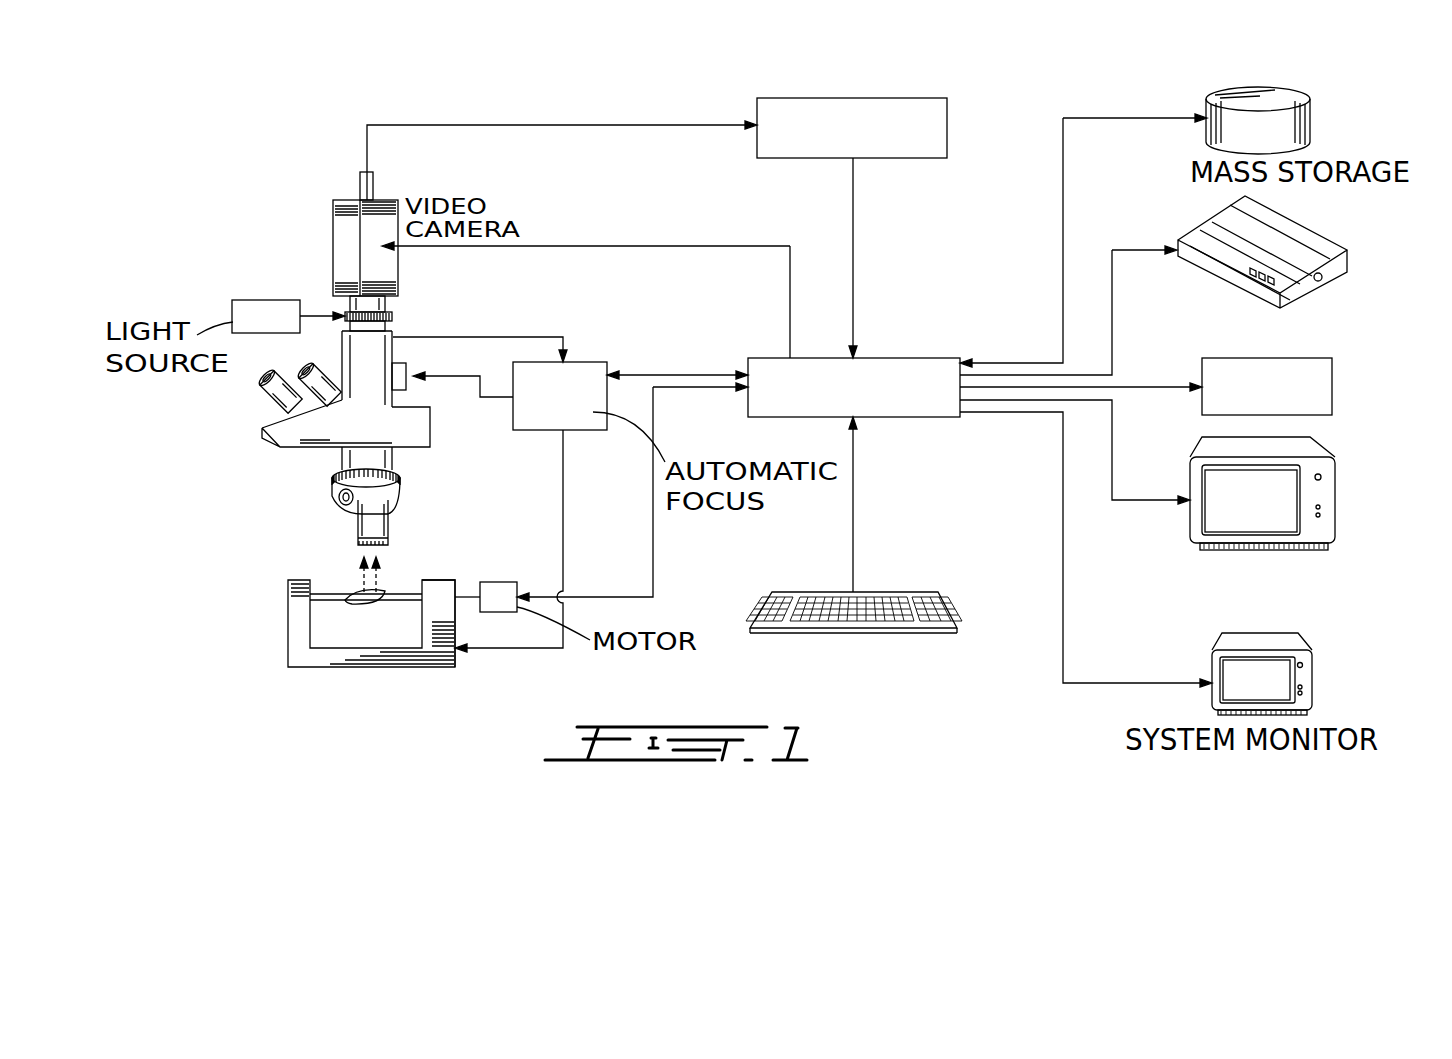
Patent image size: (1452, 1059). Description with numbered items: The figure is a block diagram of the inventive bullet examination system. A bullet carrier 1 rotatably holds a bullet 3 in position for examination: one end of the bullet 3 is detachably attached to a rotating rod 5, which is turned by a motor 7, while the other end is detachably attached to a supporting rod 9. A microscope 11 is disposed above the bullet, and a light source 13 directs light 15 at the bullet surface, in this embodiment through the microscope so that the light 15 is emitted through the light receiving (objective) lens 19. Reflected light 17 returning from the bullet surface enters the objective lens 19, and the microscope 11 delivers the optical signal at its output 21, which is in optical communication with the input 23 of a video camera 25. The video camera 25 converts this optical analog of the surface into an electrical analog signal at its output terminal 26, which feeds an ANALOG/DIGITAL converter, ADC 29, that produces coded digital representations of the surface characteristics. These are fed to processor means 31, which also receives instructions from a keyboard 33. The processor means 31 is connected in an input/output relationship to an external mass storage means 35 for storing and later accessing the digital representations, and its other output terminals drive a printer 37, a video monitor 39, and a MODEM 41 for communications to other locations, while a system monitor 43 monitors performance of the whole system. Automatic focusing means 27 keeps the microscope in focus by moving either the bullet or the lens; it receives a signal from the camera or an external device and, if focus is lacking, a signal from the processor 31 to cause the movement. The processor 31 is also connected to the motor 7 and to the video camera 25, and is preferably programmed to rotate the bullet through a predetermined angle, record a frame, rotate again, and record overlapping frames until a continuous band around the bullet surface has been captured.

The bullet carrier 1 is at (342, 663).
The bullet 3 is at (382, 592).
The rotating rod 5 is at (407, 593).
The motor 7 is at (503, 607).
The supporting rod 9 is at (323, 600).
The microscope 11 is at (377, 357).
The light source 13 is at (263, 307).
The light 15 is at (404, 522).
The reflected light 17 is at (367, 550).
The light receiving (objective) lens 19 is at (363, 537).
The output 21 is at (390, 315).
The input 23 is at (352, 313).
The video camera 25 is at (338, 218).
The output terminal 26 is at (363, 182).
The automatic focusing means 27 is at (597, 366).
The ANALOG/DIGITAL converter (ADC) 29 is at (937, 122).
The processor means 31 is at (921, 362).
The keyboard 33 is at (947, 610).
The mass storage means 35 is at (1297, 88).
The printer 37 is at (1350, 258).
The video monitor 39 is at (1337, 494).
The MODEM 41 is at (1325, 382).
The system monitor 43 is at (1313, 676).